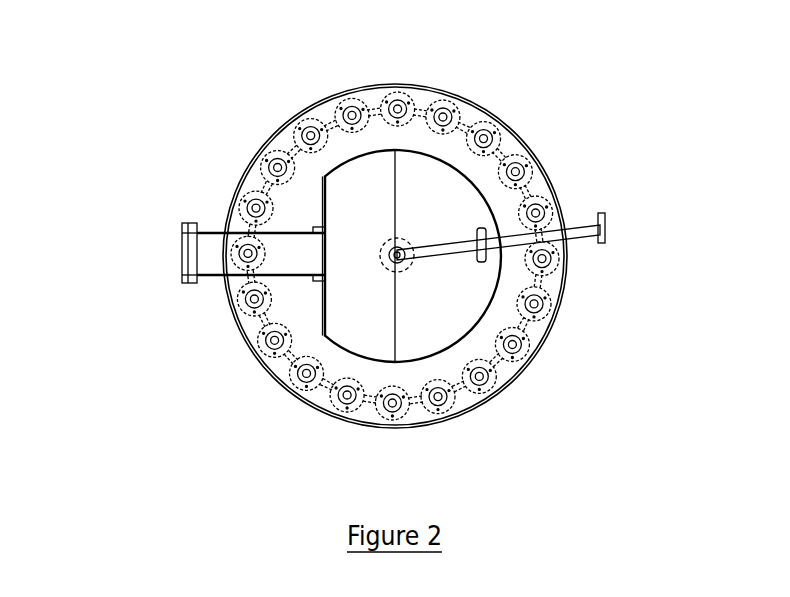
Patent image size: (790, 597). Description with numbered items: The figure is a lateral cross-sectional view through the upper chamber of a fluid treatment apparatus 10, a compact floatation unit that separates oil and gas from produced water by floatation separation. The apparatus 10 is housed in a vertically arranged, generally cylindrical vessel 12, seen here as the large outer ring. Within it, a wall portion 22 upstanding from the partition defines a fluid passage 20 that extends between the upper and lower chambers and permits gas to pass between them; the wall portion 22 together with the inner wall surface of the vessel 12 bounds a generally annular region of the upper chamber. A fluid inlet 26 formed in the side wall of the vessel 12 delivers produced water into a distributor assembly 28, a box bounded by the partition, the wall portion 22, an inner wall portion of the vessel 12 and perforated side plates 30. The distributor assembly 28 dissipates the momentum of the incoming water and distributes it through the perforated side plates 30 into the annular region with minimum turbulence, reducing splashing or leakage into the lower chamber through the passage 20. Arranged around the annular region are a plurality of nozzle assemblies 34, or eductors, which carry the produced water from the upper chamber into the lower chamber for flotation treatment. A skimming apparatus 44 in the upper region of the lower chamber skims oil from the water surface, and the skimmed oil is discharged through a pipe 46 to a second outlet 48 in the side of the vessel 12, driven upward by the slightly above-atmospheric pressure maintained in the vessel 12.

The fluid treatment apparatus 10 is at (163, 80).
The vessel 12 is at (318, 410).
The fluid passage 20 is at (450, 318).
The wall portion 22 is at (374, 150).
The fluid inlet 26 is at (187, 292).
The distributor assembly 28 is at (237, 228).
The perforated side plates 30 is at (270, 158).
The nozzle assemblies 34 is at (535, 200).
The skimming apparatus 44 is at (398, 250).
The pipe 46 is at (443, 243).
The second outlet 48 is at (605, 228).